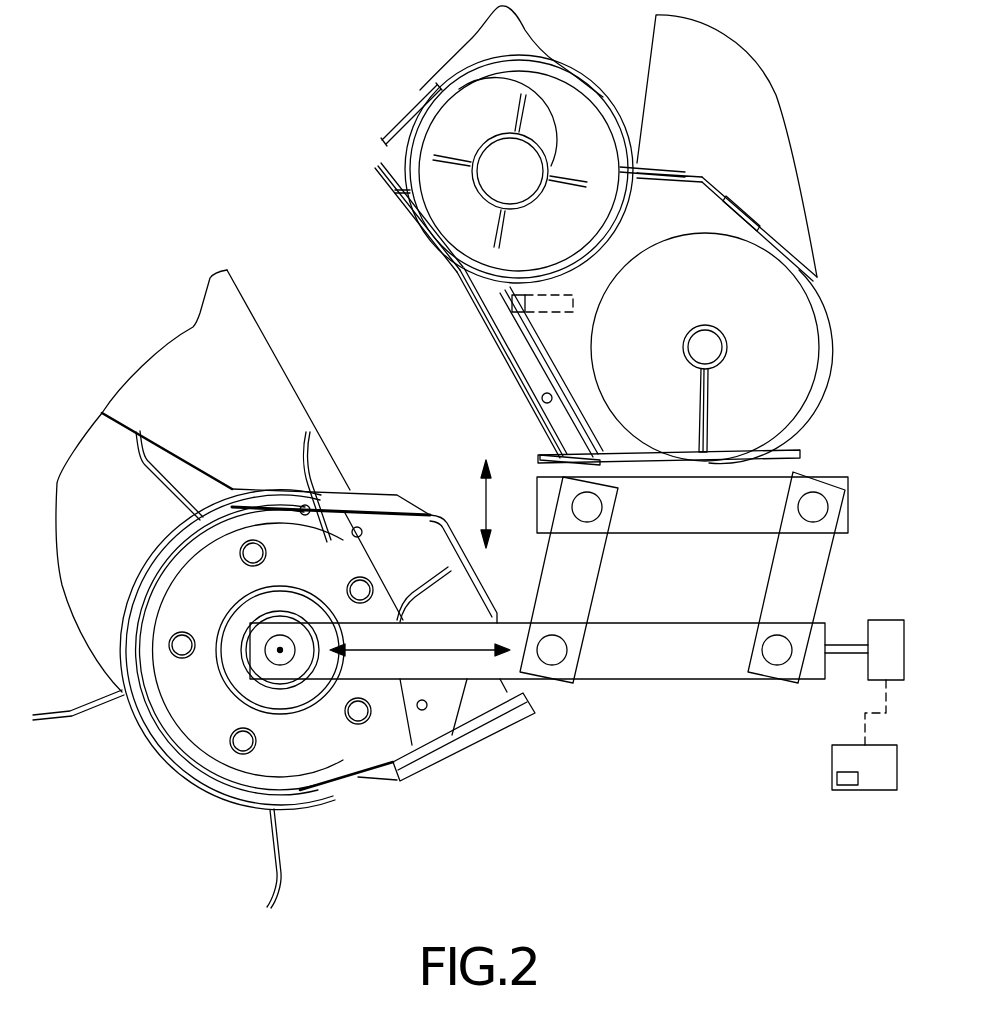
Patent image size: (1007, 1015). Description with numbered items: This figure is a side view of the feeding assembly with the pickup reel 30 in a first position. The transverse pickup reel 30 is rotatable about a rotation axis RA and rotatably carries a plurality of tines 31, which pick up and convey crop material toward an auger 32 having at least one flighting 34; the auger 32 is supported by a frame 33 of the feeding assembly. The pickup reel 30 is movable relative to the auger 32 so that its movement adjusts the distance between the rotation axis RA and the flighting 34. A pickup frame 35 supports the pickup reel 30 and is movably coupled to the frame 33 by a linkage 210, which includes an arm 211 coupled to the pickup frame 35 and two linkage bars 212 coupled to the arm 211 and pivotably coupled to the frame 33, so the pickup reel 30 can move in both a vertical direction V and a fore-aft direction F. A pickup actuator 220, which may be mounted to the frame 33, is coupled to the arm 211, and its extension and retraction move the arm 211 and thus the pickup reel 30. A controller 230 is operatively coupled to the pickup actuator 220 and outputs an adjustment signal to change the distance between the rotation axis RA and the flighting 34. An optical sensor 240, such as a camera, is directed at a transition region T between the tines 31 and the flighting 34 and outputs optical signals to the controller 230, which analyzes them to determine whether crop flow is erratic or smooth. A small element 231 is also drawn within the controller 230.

The pickup reel 30 is at (205, 730).
The tines 31 is at (318, 440).
The auger 32 is at (792, 312).
The frame 33 is at (775, 490).
The flighting 34 is at (710, 435).
The pickup frame 35 is at (430, 735).
The linkage 210 is at (547, 640).
The arm 211 is at (665, 665).
The linkage bars 212 is at (597, 553).
The pickup actuator 220 is at (886, 615).
The controller 230 is at (817, 805).
The sensor input 231 is at (848, 790).
The optical sensor 240 is at (512, 298).
The rotation axis RA is at (280, 648).
The transition region T is at (517, 377).
The vertical direction V is at (487, 500).
The fore-aft direction F is at (462, 650).